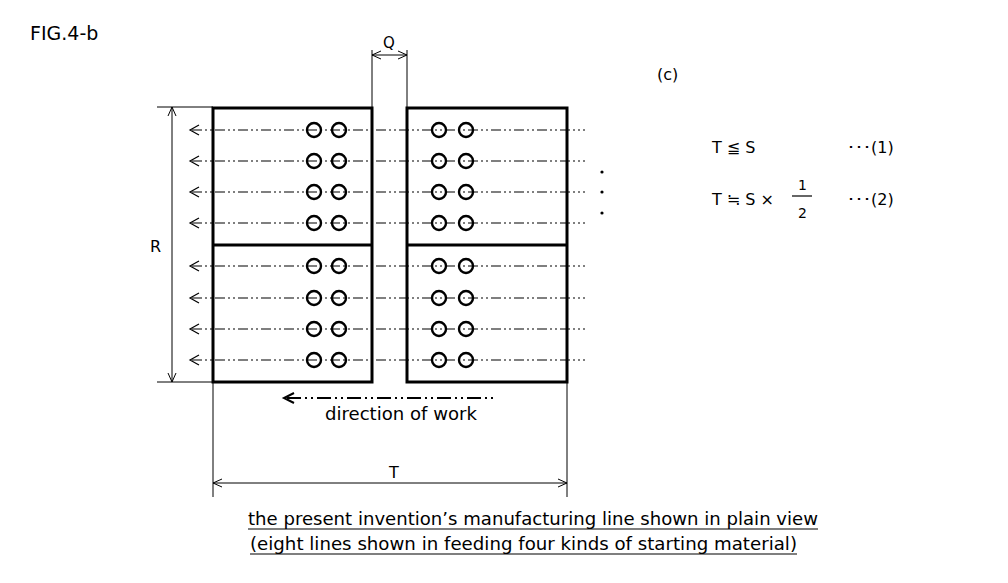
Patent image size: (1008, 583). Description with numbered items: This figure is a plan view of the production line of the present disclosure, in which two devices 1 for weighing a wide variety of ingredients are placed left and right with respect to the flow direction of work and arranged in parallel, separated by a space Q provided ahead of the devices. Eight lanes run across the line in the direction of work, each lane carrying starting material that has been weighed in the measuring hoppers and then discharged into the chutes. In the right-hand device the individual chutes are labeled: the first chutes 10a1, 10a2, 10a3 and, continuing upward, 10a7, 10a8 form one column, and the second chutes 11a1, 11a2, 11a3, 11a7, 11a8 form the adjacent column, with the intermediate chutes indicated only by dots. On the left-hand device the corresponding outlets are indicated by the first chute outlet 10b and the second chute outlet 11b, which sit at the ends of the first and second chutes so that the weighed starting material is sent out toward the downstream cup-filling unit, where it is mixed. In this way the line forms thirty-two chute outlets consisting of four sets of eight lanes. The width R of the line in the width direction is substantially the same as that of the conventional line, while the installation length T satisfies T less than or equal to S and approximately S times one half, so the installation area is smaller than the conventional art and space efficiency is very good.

The plate / work table 1 is at (305, 100).
The first chute outlet 10b is at (270, 120).
The second chute outlet 11b is at (238, 120).
The first chute 10a1 is at (471, 359).
The first chute 10a2 is at (471, 327).
The first chute 10a3 is at (471, 295).
The first chute 10a7 is at (472, 160).
The first chute 10a8 is at (471, 126).
The second chute 11a1 is at (444, 358).
The second chute 11a2 is at (444, 327).
The second chute 11a3 is at (444, 296).
The second chute 11a7 is at (444, 158).
The second chute 11a8 is at (443, 126).